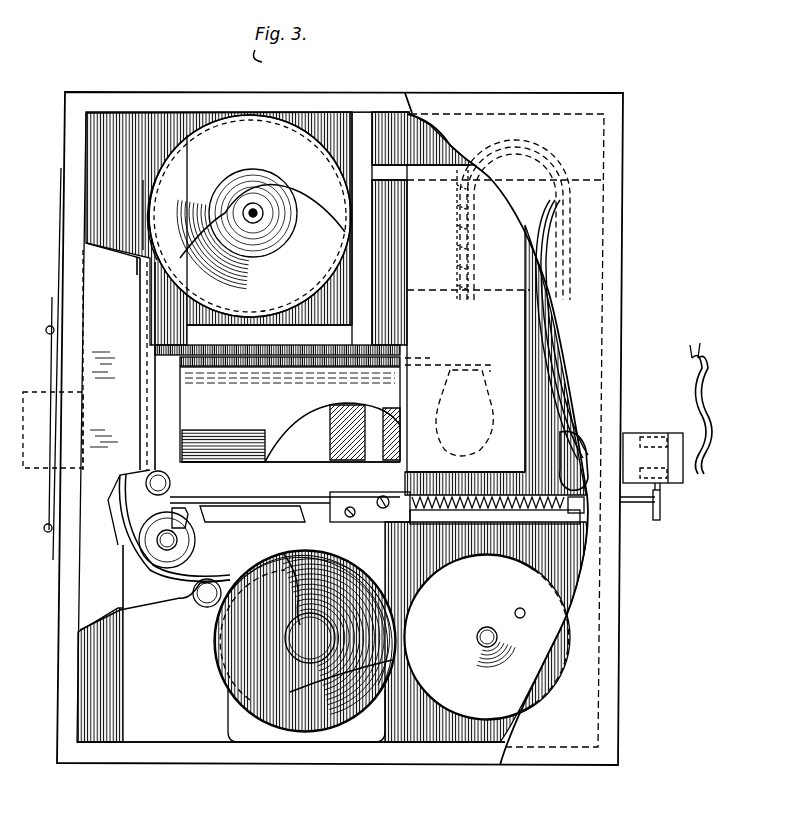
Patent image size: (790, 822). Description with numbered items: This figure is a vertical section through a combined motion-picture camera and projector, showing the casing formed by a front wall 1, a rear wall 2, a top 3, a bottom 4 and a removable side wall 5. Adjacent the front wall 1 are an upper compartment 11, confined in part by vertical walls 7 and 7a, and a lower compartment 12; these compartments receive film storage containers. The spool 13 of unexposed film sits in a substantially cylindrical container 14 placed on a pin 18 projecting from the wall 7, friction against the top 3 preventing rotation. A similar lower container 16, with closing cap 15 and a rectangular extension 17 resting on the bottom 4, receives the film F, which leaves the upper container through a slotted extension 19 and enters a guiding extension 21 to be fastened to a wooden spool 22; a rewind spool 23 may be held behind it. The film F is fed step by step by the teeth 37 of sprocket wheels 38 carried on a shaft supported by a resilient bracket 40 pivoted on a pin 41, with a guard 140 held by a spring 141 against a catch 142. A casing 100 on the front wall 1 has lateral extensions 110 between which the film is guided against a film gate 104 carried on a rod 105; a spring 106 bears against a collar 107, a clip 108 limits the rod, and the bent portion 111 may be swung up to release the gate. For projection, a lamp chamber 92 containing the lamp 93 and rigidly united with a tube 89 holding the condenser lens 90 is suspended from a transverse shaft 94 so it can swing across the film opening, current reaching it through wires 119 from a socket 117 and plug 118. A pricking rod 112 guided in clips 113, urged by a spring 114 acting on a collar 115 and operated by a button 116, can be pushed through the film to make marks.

The front wall 1 is at (65, 152).
The rear wall 2 is at (606, 322).
The top 3 is at (152, 97).
The bottom 4 is at (195, 758).
The side wall 5 is at (578, 305).
The vertical wall 7 is at (160, 120).
The vertical wall 7a is at (360, 120).
The upper compartment 11 is at (268, 219).
The lower compartment 12 is at (400, 632).
The spool 13 is at (268, 205).
The container 14 is at (300, 130).
The closing cap 15 is at (252, 118).
The container 16 is at (386, 594).
The rectangular extension 17 is at (385, 720).
The pin 18 is at (250, 212).
The extension 19 is at (143, 212).
The guiding extension 21 is at (216, 592).
The spool 22 is at (305, 665).
The rewind spool 23 is at (542, 595).
The teeth 37 is at (188, 522).
The sprocket wheels 38 is at (196, 548).
The bracket 40 is at (135, 545).
The pin 41 is at (146, 485).
The projecting tube 89 is at (290, 414).
The condenser lens 90 is at (345, 405).
The lamp chamber 92 is at (605, 293).
The lamp 93 is at (436, 450).
The transverse shaft 94 is at (403, 110).
The casing 100 is at (100, 368).
The film gate 104 is at (150, 298).
The rod 105 is at (300, 366).
The spring 106 is at (210, 372).
The collar 107 is at (255, 345).
The clip 108 is at (405, 357).
The lateral extensions 110 is at (90, 612).
The bent portion 111 is at (405, 346).
The pricking rod 112 is at (248, 498).
The clips 113 is at (345, 500).
The spring 114 is at (458, 492).
The collar 115 is at (560, 497).
The button 116 is at (656, 520).
The socket 117 is at (646, 440).
The plug 118 is at (692, 424).
The wires 119 is at (552, 380).
The guard 140 is at (180, 575).
The spring 141 is at (120, 500).
The catch 142 is at (120, 615).
The film F is at (150, 238).